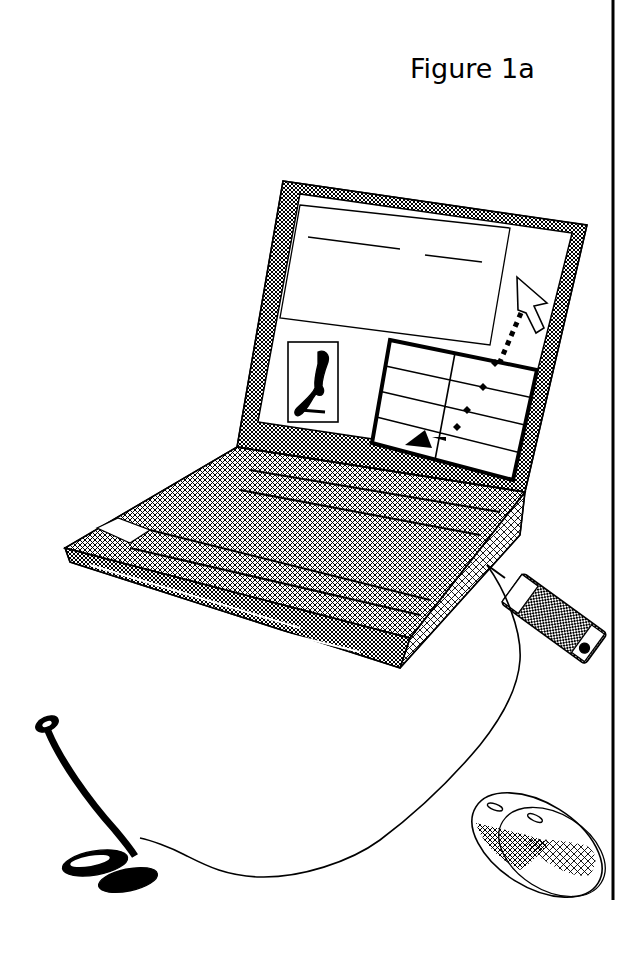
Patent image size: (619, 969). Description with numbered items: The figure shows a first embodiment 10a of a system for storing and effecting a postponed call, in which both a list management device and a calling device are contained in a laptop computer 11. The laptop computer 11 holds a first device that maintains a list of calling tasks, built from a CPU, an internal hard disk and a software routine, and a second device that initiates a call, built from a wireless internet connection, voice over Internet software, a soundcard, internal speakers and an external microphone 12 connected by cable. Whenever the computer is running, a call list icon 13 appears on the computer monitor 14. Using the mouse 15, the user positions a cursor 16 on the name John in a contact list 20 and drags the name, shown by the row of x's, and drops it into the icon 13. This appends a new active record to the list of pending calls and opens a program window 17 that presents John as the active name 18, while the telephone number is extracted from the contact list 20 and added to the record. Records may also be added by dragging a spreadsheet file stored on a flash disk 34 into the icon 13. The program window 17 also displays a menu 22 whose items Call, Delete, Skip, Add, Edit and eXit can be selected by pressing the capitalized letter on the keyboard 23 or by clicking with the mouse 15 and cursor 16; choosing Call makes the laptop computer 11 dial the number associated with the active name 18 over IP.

The first embodiment 10a is at (113, 78).
The laptop computer 11 is at (320, 680).
The external microphone 12 is at (87, 808).
The call list icon 13 is at (287, 383).
The computer monitor 14 is at (533, 243).
The mouse 15 is at (470, 840).
The cursor 16 is at (533, 343).
The program window 17 is at (387, 213).
The active name 18 is at (443, 222).
The contact list 20 is at (537, 450).
The menu 22 is at (307, 250).
The keyboard 23 is at (183, 507).
The flash disk 34 is at (583, 660).